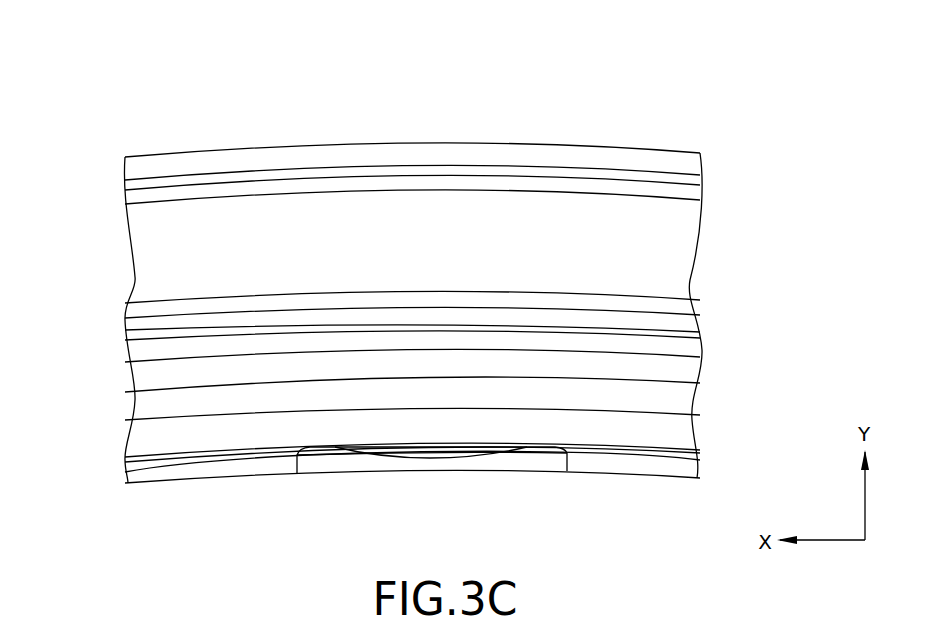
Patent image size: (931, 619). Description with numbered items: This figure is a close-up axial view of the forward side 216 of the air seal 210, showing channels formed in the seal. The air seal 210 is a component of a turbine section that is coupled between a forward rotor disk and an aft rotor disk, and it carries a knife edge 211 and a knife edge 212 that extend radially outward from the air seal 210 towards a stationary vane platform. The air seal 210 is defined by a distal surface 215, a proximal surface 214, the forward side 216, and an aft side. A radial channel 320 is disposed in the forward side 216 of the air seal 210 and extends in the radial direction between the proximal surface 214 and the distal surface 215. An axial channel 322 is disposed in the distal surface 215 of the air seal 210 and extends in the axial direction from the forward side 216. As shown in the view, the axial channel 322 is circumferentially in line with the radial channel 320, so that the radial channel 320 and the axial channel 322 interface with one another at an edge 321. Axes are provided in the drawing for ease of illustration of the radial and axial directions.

The air seal 210 is at (665, 88).
The knife edge 211 is at (130, 330).
The knife edge 212 is at (130, 315).
The proximal surface 214 is at (673, 485).
The distal surface 215 is at (680, 446).
The forward side 216 is at (149, 483).
The radial channel 320 is at (328, 473).
The edge 321 is at (395, 453).
The axial channel 322 is at (444, 452).